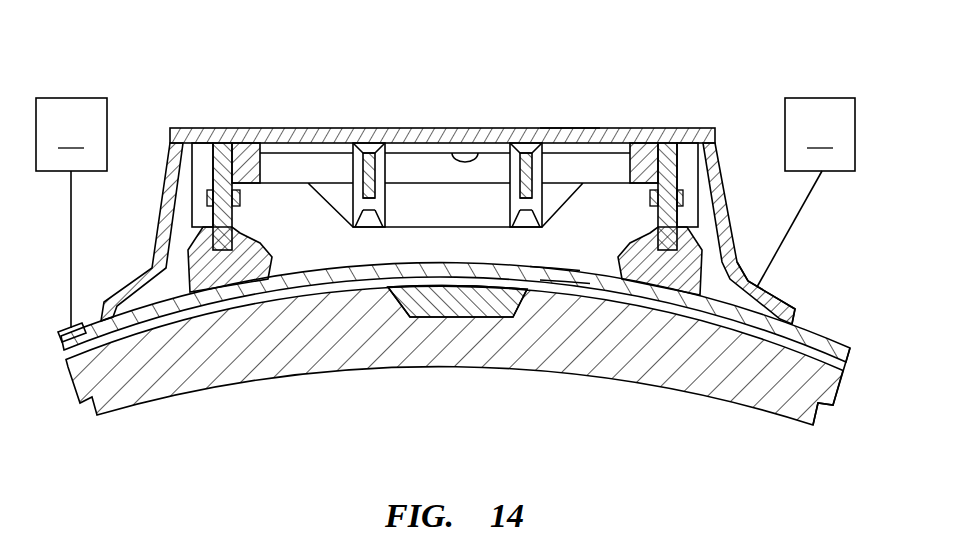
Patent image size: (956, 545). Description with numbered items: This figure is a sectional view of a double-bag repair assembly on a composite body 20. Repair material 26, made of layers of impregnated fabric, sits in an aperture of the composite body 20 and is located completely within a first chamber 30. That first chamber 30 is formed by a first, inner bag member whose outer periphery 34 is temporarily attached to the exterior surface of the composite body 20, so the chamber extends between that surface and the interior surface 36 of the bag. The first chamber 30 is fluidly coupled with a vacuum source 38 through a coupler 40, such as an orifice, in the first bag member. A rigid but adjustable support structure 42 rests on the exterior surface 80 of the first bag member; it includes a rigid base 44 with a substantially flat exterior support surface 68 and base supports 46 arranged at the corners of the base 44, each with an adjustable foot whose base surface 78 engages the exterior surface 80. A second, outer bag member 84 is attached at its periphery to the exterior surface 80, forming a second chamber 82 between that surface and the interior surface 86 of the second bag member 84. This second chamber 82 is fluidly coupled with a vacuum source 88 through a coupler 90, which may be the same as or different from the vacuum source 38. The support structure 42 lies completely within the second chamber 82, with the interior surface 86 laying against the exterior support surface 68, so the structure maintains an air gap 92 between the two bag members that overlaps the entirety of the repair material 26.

The composite body 20 is at (780, 395).
The repair material 26 is at (428, 296).
The first chamber 30 is at (195, 318).
The outer periphery 34 is at (840, 342).
The interior surface 36 is at (563, 284).
The vacuum source 38 is at (71, 213).
The coupler 40 is at (62, 327).
The support structure 42 is at (643, 141).
The base 44 is at (558, 129).
The base supports 46 is at (188, 242).
The exterior support surface 68 is at (432, 129).
The base surface 78 is at (204, 312).
The exterior surface 80 is at (556, 274).
The second chamber 82 is at (270, 225).
The second bag member 84 is at (272, 124).
The interior surface 86 is at (482, 152).
The vacuum source 88 is at (806, 192).
The coupler 90 is at (767, 286).
The air gap 92 is at (344, 259).